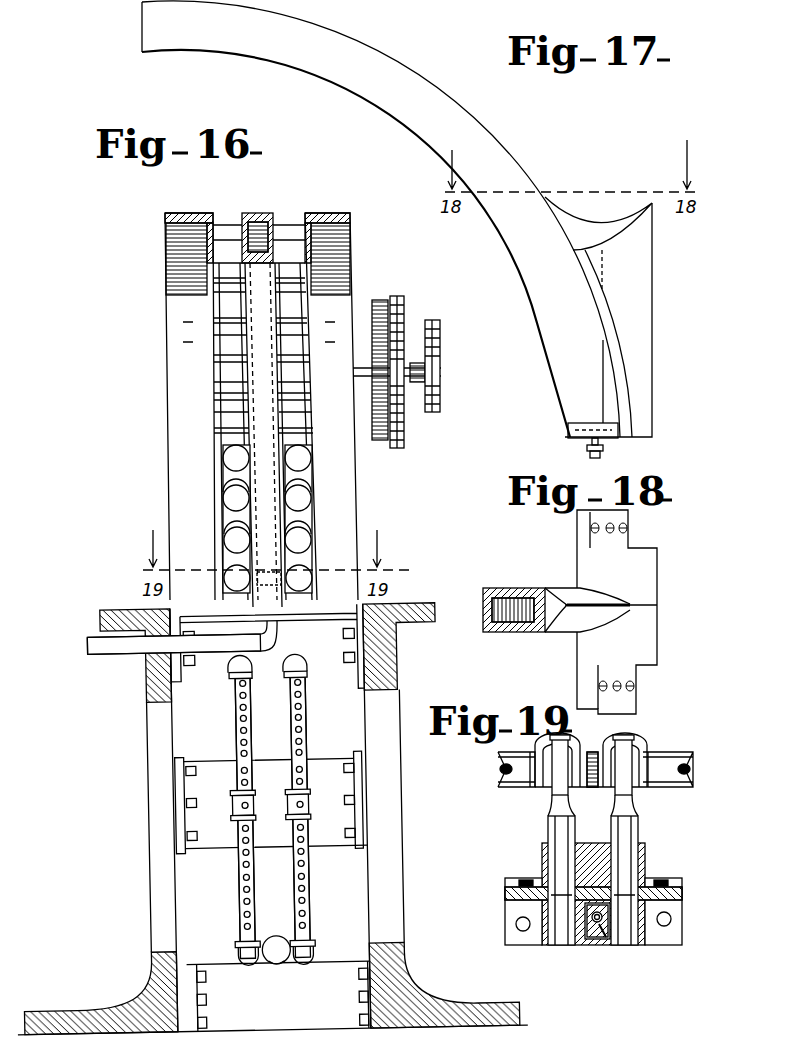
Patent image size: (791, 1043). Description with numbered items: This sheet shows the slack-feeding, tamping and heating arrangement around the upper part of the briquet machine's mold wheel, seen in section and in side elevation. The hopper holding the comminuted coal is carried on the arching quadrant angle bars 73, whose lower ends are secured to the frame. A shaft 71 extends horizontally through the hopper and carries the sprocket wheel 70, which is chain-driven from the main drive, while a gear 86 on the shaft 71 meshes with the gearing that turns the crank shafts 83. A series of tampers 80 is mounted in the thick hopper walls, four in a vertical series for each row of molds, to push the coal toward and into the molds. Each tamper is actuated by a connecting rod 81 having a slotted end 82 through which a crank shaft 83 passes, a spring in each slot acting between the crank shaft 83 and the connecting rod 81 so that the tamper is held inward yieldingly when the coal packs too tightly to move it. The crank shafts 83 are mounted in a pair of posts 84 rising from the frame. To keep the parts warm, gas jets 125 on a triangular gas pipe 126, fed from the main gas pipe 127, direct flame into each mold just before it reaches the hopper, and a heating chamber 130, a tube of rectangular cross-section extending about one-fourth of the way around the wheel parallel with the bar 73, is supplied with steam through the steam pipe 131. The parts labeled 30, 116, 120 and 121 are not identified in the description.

In FIG. 16, the housing casing 30 is at (152, 723).
In FIG. 19, the housing casing 30 is at (513, 788).
In FIG. 16, the sprocket wheel 70 is at (437, 358).
In FIG. 16, the shaft 71 is at (413, 366).
In FIG. 16, the arching quadrant angle bars 73 is at (167, 243).
In FIG. 19, the arching quadrant angle bars 73 is at (542, 935).
In FIG. 16, the tampers 80 is at (233, 496).
In FIG. 19, the tampers 80 is at (568, 845).
In FIG. 19, the connecting rods 81 is at (570, 796).
In FIG. 19, the slotted ends 82 is at (552, 740).
In FIG. 19, the crank shaft 83 is at (588, 748).
In FIG. 19, the posts 84 is at (653, 757).
In FIG. 16, the gear 86 is at (388, 430).
In FIG. 16, the sprocket 116 is at (402, 300).
In FIG. 16, the guide 120 is at (230, 402).
In FIG. 16, the rail 121 is at (228, 230).
In FIG. 16, the gas jets 125 is at (310, 741).
In FIG. 16, the triangular gas pipe 126 is at (237, 720).
In FIG. 16, the main gas pipe 127 is at (277, 937).
In FIG. 16, the heating chamber 130 is at (265, 222).
In FIG. 17, the heating chamber 130 is at (409, 123).
In FIG. 18, the heating chamber 130 is at (531, 581).
In FIG. 19, the heating chamber 130 is at (542, 848).
In FIG. 16, the steam pipe 131 is at (209, 653).
In FIG. 17, the steam pipe 131 is at (603, 454).
In FIG. 19, the steam pipe 131 is at (605, 938).